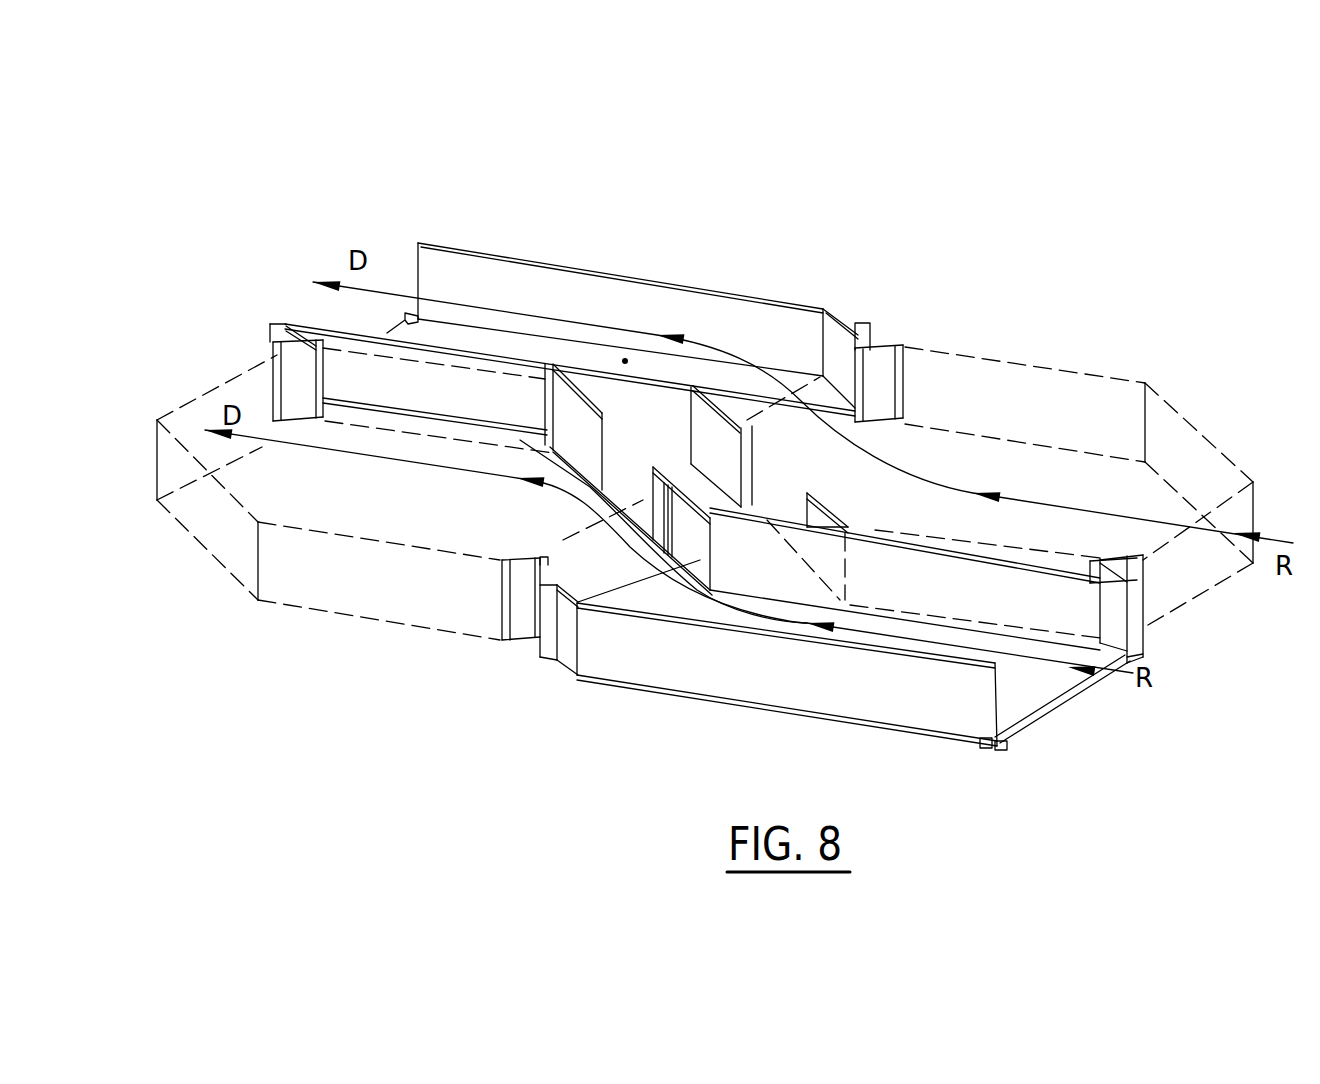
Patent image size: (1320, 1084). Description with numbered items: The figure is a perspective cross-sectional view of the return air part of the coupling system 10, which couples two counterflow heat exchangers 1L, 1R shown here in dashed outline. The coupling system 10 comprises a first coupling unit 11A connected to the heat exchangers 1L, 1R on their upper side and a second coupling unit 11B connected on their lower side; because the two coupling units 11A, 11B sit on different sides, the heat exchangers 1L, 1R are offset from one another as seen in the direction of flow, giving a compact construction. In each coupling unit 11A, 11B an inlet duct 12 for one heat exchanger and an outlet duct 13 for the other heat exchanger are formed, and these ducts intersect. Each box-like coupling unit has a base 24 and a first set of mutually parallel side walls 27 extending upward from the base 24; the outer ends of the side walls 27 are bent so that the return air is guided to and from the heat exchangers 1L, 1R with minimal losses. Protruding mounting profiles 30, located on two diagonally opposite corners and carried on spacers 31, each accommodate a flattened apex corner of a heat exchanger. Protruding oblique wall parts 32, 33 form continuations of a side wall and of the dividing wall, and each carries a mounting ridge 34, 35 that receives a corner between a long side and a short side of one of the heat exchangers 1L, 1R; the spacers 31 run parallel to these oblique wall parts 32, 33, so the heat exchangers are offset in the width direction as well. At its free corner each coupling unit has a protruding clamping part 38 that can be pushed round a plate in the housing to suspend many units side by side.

The coupling system 10 is at (1065, 180).
The heat exchanger 1L is at (268, 644).
The heat exchanger 1R is at (1175, 347).
The first coupling unit 11A is at (830, 267).
The second coupling unit 11B is at (574, 715).
The inlet duct 12 is at (1043, 685).
The outlet duct 13 is at (625, 361).
The base 24 is at (1053, 710).
The side walls 27 is at (620, 293).
The mounting profiles 30 is at (300, 405).
The spacers 31 is at (282, 340).
The oblique wall part 32 is at (703, 410).
The oblique wall part 33 is at (585, 447).
The mounting ridge 34 is at (660, 468).
The mounting ridge 35 is at (553, 406).
The clamping part 38 is at (405, 320).